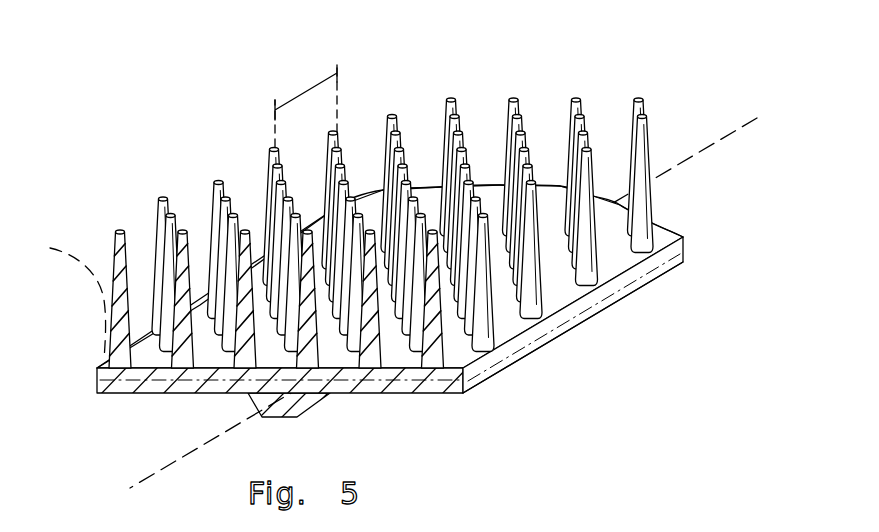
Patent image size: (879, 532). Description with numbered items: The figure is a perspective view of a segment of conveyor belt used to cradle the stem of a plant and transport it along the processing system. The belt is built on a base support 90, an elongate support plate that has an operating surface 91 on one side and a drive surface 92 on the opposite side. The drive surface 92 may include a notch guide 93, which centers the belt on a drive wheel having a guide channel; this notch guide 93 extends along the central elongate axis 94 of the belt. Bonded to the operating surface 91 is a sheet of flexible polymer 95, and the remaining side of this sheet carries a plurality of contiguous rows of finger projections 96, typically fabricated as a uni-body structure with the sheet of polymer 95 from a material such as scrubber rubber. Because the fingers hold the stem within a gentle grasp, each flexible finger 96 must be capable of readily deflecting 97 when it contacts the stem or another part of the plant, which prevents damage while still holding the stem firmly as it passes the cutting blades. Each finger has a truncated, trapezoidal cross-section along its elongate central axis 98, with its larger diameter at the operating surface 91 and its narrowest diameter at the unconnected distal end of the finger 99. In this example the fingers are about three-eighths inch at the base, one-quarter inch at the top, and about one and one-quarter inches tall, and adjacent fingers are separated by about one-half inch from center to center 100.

The base support 90 is at (542, 340).
The operating surface 91 is at (637, 268).
The drive surface 92 is at (400, 393).
The notch guide 93 is at (260, 398).
The central elongate axis 94 is at (438, 304).
The sheet of flexible polymer 95 is at (650, 226).
The finger projections 96 is at (110, 257).
The deflecting 97 is at (80, 279).
The elongate central axis of finger 98 is at (100, 366).
The distal end of finger 99 is at (181, 233).
The center-to-center spacing 100 is at (322, 76).